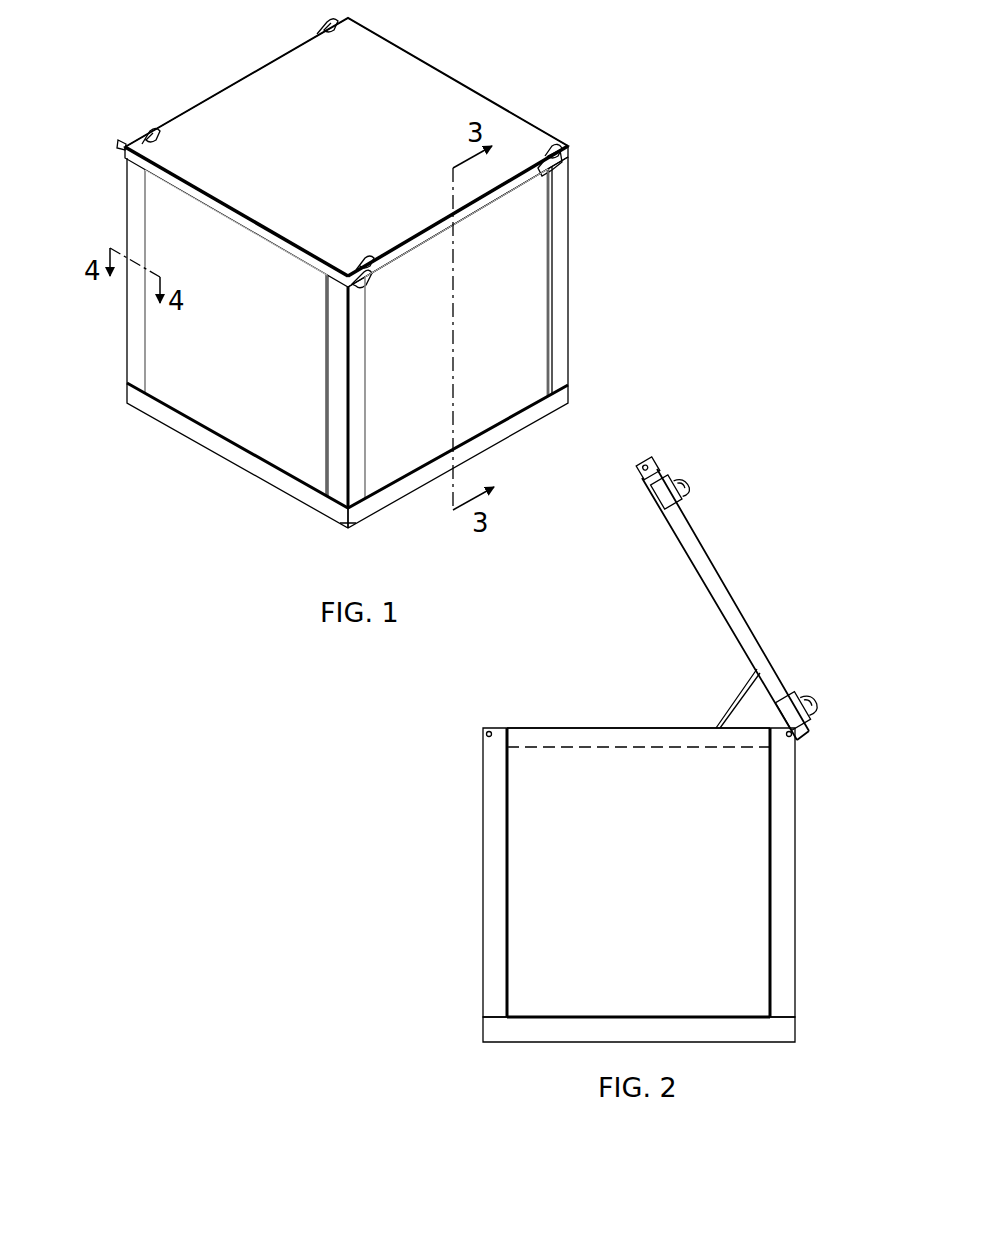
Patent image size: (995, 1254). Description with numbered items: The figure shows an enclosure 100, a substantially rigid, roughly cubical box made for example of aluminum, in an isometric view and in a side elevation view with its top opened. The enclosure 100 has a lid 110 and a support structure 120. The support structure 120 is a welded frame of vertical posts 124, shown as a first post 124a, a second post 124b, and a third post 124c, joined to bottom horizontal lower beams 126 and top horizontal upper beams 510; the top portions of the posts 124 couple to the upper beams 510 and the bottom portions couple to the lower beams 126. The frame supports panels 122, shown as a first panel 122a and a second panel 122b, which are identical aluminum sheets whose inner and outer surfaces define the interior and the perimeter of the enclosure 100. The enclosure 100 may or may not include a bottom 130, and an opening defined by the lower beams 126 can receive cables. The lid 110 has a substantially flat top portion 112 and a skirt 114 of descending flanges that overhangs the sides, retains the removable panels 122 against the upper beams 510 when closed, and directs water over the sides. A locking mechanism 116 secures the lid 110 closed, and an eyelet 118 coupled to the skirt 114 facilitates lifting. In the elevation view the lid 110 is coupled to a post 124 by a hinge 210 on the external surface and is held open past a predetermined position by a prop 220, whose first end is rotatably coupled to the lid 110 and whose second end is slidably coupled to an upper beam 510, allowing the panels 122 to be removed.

In FIG. 1, the enclosure 100 is at (196, 62).
In FIG. 2, the enclosure 100 is at (573, 667).
In FIG. 1, the lid 110 is at (404, 54).
In FIG. 2, the lid 110 is at (738, 603).
In FIG. 1, the top portion 112 is at (343, 157).
In FIG. 1, the skirt 114 is at (521, 182).
In FIG. 1, the locking mechanism 116 is at (356, 268).
In FIG. 1, the eyelet 118 is at (563, 160).
In FIG. 1, the support structure 120 is at (112, 302).
In FIG. 2, the support structure 120 is at (462, 872).
In FIG. 2, the panels 122 is at (522, 951).
In FIG. 1, the first panel 122a is at (527, 366).
In FIG. 1, the second panel 122b is at (163, 219).
In FIG. 2, the posts 124 is at (789, 890).
In FIG. 1, the first post 124a is at (566, 330).
In FIG. 1, the second post 124b is at (335, 477).
In FIG. 1, the third post 124c is at (127, 357).
In FIG. 1, the lower beams 126 is at (332, 515).
In FIG. 1, the bottom 130 is at (164, 432).
In FIG. 2, the bottom 130 is at (639, 1029).
In FIG. 2, the hinge 210 is at (802, 741).
In FIG. 2, the prop 220 is at (731, 703).
In FIG. 2, the upper beams 510 is at (548, 738).